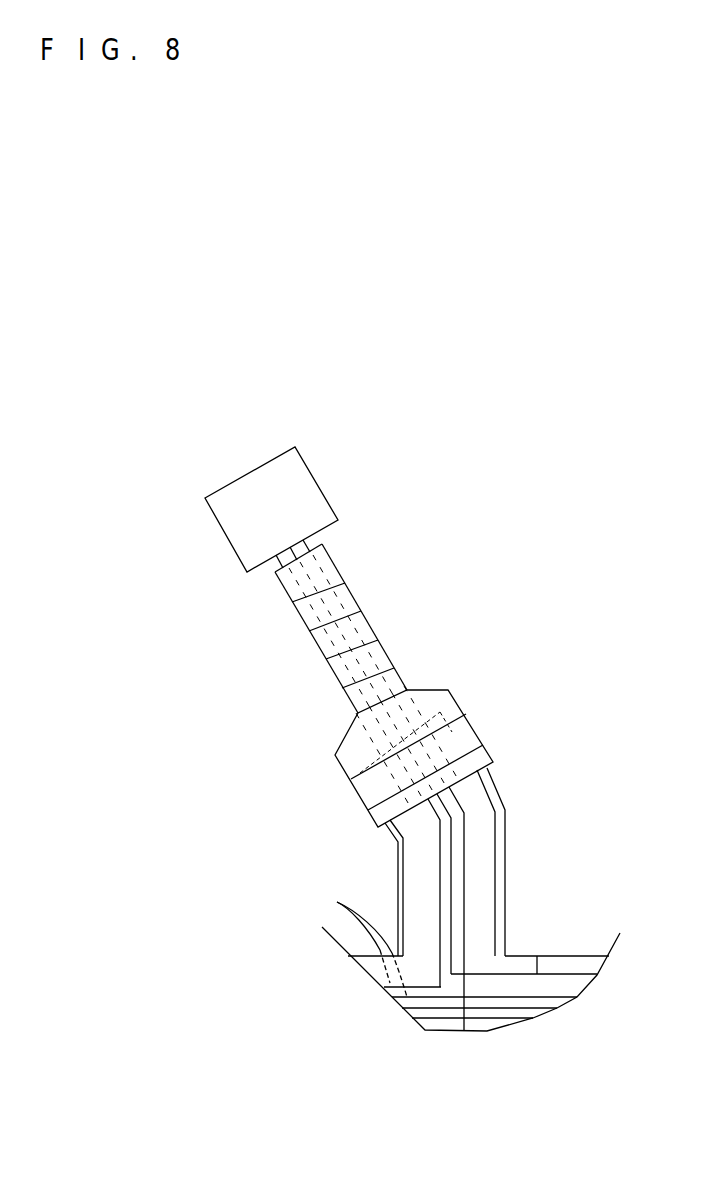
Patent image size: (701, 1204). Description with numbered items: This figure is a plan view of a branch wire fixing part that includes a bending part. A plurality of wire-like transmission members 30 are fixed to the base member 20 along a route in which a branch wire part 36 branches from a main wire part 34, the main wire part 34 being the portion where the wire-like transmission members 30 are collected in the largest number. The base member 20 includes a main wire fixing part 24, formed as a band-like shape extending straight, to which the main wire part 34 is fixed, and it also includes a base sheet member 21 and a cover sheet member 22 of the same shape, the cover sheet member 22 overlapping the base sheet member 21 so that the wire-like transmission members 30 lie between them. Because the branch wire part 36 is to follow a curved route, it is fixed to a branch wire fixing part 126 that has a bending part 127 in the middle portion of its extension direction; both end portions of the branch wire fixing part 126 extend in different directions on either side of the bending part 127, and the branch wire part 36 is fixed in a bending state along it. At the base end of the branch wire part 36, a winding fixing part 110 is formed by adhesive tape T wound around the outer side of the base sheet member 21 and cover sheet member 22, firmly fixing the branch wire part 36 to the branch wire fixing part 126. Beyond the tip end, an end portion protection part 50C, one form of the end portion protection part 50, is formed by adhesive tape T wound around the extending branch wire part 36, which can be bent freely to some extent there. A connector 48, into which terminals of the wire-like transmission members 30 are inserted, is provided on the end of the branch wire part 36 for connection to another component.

The connector 48 is at (319, 484).
The branch wire part 36 is at (342, 587).
The end portion protection part 50 is at (394, 628).
The end portion protection part 50C is at (380, 634).
The adhesive tape T is at (449, 693).
The winding fixing part 110 is at (481, 732).
The bending part 127 is at (505, 810).
The branch wire fixing part 126 is at (507, 847).
The base member 20 is at (332, 884).
The cover sheet member 22 is at (397, 850).
The base sheet member 21 is at (397, 877).
The wire-like transmission member 30 is at (450, 917).
The main wire fixing part 24 is at (587, 956).
The main wire part 34 is at (537, 956).